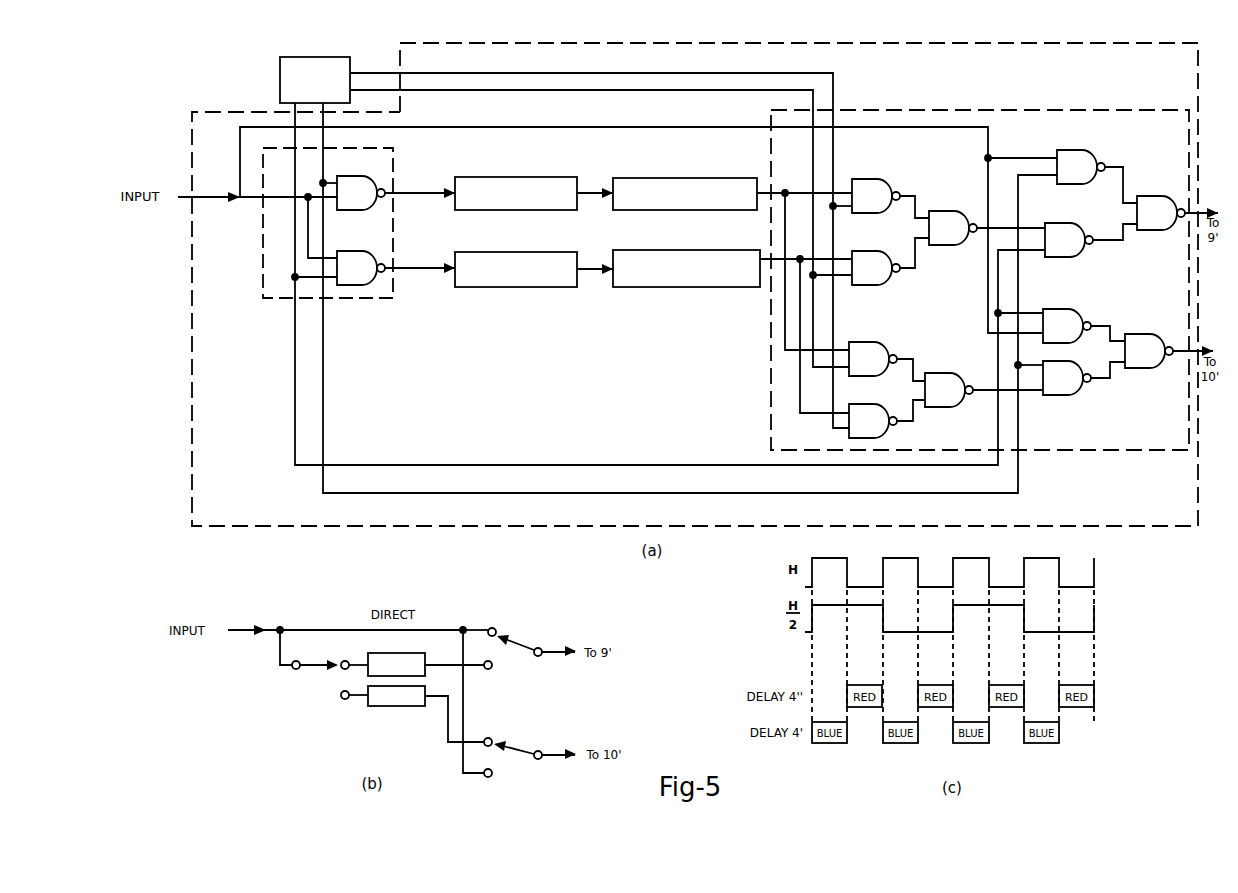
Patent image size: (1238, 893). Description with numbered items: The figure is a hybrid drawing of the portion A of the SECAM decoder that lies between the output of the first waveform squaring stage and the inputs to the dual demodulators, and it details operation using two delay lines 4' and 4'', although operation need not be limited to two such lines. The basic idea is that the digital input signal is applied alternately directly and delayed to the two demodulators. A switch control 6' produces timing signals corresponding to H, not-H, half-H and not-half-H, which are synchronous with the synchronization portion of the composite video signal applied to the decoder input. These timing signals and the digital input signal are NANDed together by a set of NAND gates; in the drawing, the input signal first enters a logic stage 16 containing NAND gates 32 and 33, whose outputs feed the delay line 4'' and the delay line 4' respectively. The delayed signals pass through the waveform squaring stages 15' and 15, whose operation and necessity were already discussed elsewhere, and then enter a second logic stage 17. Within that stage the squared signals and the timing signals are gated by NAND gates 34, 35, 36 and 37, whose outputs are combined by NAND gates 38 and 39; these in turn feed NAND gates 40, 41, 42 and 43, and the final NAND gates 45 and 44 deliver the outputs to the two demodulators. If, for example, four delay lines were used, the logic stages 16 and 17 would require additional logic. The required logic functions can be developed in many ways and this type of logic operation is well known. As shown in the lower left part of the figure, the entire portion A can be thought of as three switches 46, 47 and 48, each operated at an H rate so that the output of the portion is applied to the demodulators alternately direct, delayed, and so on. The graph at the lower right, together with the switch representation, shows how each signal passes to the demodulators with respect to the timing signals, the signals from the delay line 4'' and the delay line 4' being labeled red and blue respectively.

The portion A is at (1084, 43).
The switch control 6' is at (315, 65).
The logic stage 16 is at (388, 299).
The logic stage 17 is at (1029, 110).
The NAND gate 32 is at (368, 176).
The NAND gate 33 is at (368, 250).
The delay line 4'' is at (472, 414).
The delay line 4' is at (472, 478).
The waveform squaring stage 15' is at (685, 181).
The waveform squaring stage 15 is at (686, 259).
The NAND gate 34 is at (886, 179).
The NAND gate 35 is at (882, 256).
The NAND gate 36 is at (870, 342).
The NAND gate 37 is at (893, 398).
The NAND gate 38 is at (958, 209).
The NAND gate 39 is at (955, 373).
The NAND gate 40 is at (1083, 150).
The NAND gate 41 is at (1080, 271).
The NAND gate 42 is at (1080, 310).
The NAND gate 43 is at (1078, 395).
The NAND gate 44 is at (1148, 334).
The NAND gate 45 is at (1174, 192).
The switch 46 is at (315, 669).
The switch 47 is at (523, 649).
The switch 48 is at (522, 757).